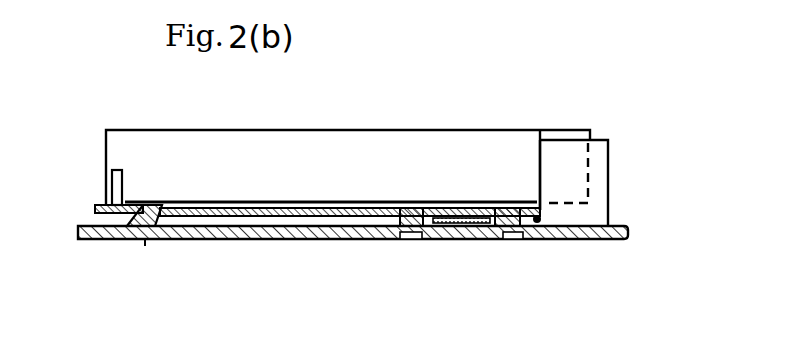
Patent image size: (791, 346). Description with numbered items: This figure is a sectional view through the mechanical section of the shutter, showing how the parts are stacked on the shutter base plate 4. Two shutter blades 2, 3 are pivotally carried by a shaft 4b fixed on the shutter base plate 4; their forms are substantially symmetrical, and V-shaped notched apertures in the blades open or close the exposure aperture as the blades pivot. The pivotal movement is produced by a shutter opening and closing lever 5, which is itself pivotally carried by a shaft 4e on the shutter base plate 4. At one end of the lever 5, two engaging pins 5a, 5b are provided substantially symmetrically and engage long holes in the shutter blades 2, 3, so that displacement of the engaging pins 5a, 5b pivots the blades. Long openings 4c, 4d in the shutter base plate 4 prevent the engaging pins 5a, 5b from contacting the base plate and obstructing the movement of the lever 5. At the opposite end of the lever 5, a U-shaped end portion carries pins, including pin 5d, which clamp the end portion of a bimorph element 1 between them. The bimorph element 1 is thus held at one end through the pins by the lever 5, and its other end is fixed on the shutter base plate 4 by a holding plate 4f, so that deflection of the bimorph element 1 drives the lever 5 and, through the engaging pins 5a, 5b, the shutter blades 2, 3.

The bimorph element 1 is at (177, 155).
The shutter blade 2 is at (527, 210).
The shutter blade 3 is at (468, 241).
The shutter base plate 4 is at (85, 241).
The shaft 4b is at (453, 210).
The long opening 4c is at (503, 241).
The long opening 4d is at (400, 241).
The shaft 4e is at (148, 241).
The holding plate 4f is at (600, 168).
The shutter opening and closing lever 5 is at (291, 217).
The engaging pin 5a is at (510, 241).
The engaging pin 5b is at (410, 241).
The pin 5d is at (104, 183).